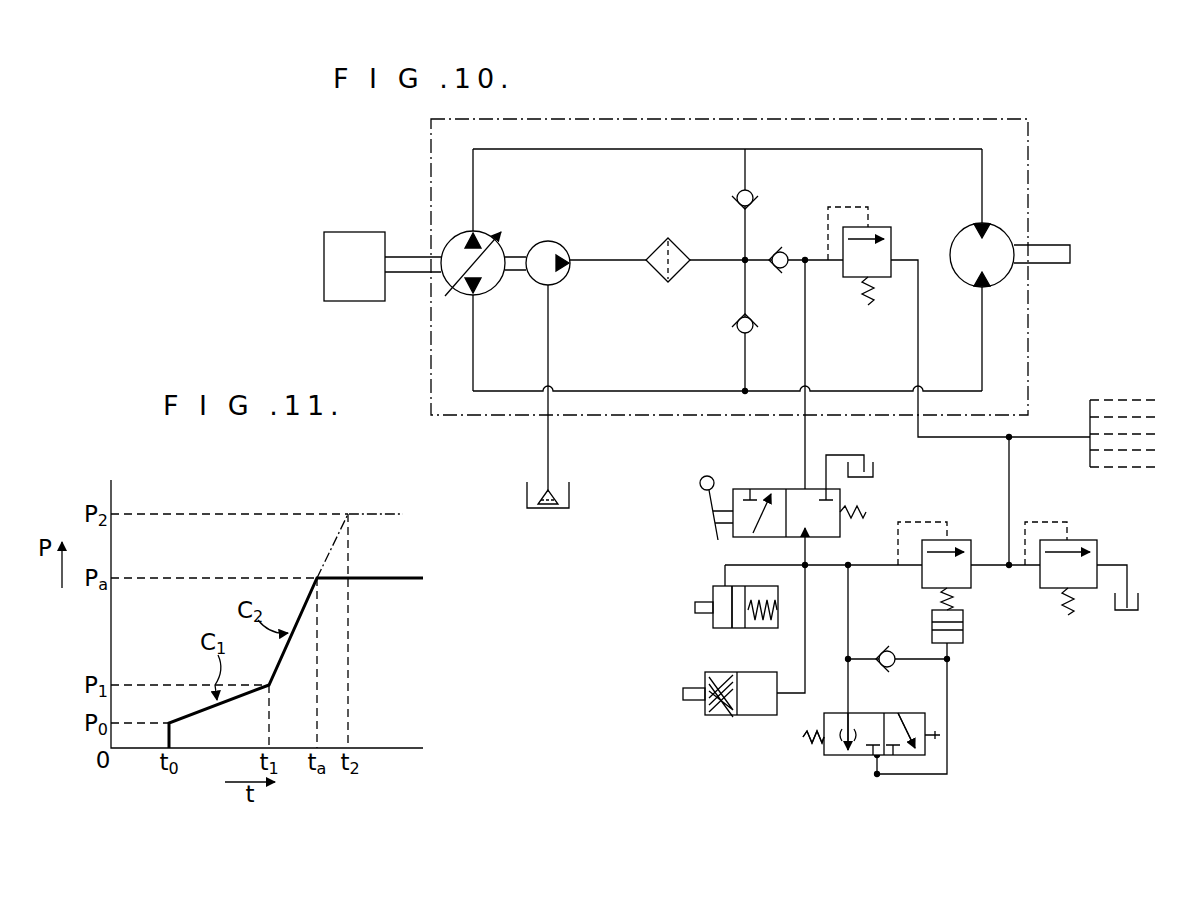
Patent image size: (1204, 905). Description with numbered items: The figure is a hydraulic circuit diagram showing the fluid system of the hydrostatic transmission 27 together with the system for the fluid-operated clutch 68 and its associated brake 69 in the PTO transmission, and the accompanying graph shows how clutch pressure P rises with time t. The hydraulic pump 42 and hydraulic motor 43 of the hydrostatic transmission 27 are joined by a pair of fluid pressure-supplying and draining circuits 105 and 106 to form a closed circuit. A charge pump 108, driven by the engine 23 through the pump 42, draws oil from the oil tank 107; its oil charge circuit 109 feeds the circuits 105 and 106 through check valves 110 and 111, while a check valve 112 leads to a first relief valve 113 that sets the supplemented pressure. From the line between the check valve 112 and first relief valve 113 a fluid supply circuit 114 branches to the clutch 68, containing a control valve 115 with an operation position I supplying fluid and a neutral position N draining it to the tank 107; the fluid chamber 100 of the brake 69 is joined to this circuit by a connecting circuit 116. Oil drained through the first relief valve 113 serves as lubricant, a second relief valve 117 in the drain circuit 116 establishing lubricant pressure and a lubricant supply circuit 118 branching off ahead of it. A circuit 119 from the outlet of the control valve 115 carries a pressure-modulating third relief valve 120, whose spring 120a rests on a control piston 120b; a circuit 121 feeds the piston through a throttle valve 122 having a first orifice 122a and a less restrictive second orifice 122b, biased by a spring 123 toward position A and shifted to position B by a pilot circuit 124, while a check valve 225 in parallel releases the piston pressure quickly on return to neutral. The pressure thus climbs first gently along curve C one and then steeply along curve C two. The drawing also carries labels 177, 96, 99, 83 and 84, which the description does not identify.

The hydrostatic transmission 27 is at (937, 116).
The engine 23 is at (333, 270).
The hydraulic pump 42 is at (487, 282).
The hydraulic motor 43 is at (997, 245).
The fluid pressure-supplying and draining circuit 105 is at (700, 149).
The fluid pressure-supplying and draining circuit 106 is at (658, 391).
The oil tank 107 is at (527, 491).
The charge pump 108 is at (551, 252).
The oil charge circuit 109 is at (549, 312).
The check valve 110 is at (753, 196).
The check valve 111 is at (752, 332).
The check valve 112 is at (783, 251).
The first relief valve 113 is at (893, 228).
The fluid supply circuit 114 is at (803, 428).
The control valve 115 is at (841, 537).
The connecting circuit 116 is at (740, 565).
The second relief valve 117 is at (1097, 540).
The lubricant supply circuit 118 is at (1050, 437).
The circuit 119 is at (860, 567).
The third relief valve 120 is at (965, 540).
The spring 120a is at (955, 599).
The control piston 120b is at (965, 631).
The circuit 121 is at (848, 696).
The throttle valve 122 is at (829, 757).
The first orifice 122a is at (840, 750).
The second orifice 122b is at (913, 726).
The spring 123 is at (808, 746).
The pilot circuit 124 is at (940, 735).
The strainer 177 is at (558, 495).
The check valve 225 is at (885, 651).
The brake 69 is at (717, 578).
The fluid chamber 100 is at (713, 595).
The piston 96 is at (738, 622).
The spring 99 is at (764, 625).
The piston rod 83 is at (715, 672).
The piston 84 is at (737, 708).
The fluid-operated clutch 68 is at (757, 718).